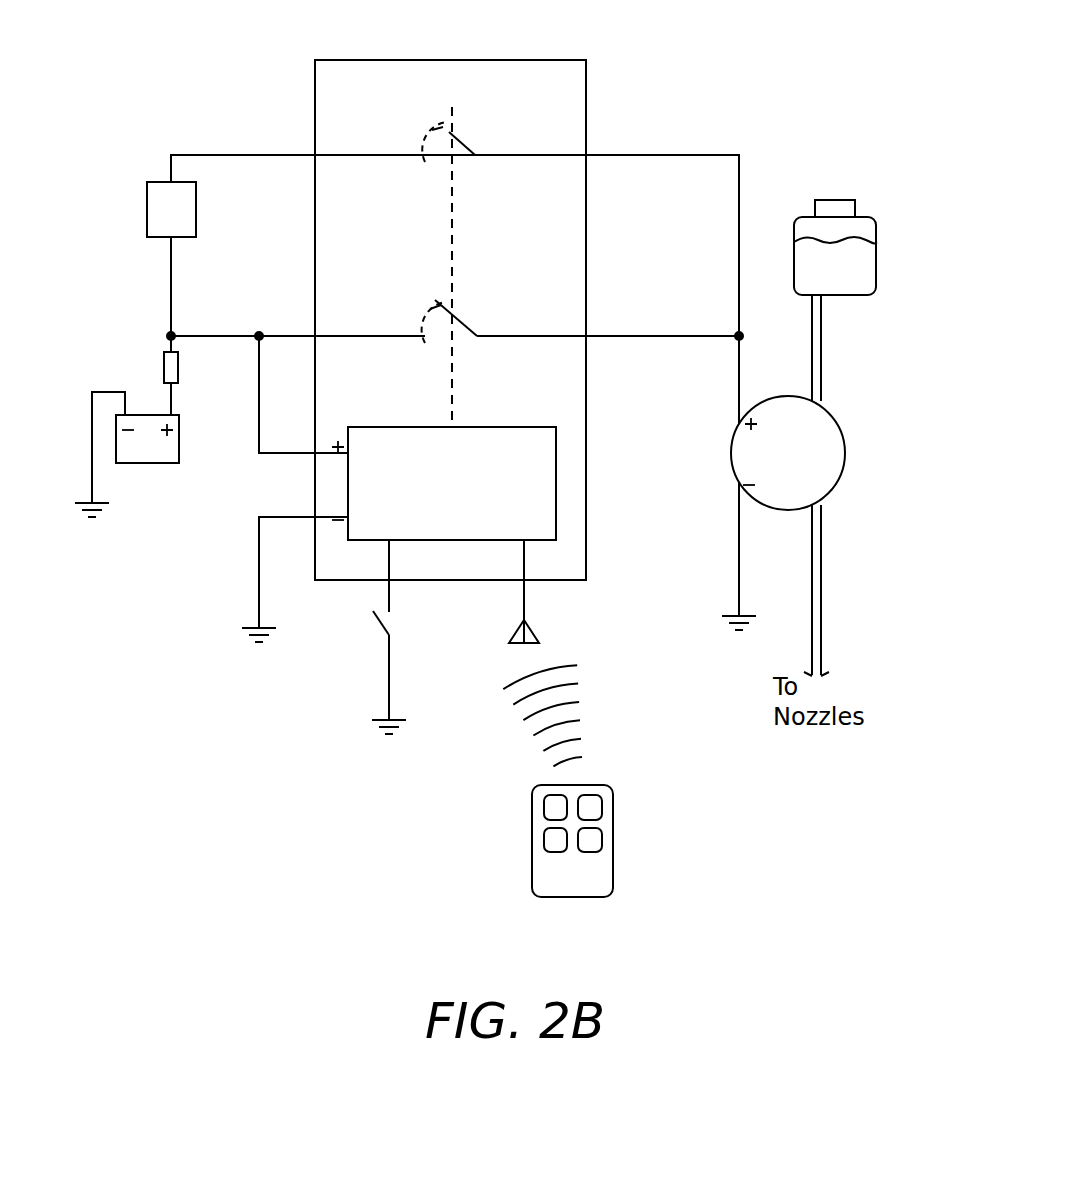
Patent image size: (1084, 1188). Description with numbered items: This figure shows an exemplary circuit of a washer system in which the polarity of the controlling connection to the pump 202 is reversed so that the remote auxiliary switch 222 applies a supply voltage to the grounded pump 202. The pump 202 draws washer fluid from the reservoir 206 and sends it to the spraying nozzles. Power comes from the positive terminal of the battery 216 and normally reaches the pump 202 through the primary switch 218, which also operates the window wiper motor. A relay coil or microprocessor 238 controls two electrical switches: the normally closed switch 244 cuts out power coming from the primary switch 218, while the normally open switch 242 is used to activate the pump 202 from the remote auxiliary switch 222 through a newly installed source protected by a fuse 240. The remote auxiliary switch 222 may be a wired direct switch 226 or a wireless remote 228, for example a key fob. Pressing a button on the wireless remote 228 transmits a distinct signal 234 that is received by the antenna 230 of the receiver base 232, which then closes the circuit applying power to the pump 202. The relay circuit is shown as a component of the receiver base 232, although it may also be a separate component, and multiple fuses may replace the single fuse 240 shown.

The pump 202 is at (846, 447).
The reservoir 206 is at (852, 295).
The battery 216 is at (140, 463).
The primary switch 218 is at (147, 203).
The remote auxiliary switch 222 is at (373, 824).
The direct switch 226 is at (373, 636).
The wireless remote 228 is at (590, 785).
The antenna 230 is at (524, 598).
The receiver base 232 is at (528, 60).
The signal 234 is at (533, 738).
The relay coil or microprocessor 238 is at (556, 495).
The fuse 240 is at (164, 367).
The normally open switch 242 is at (541, 288).
The normally closed switch 244 is at (541, 112).